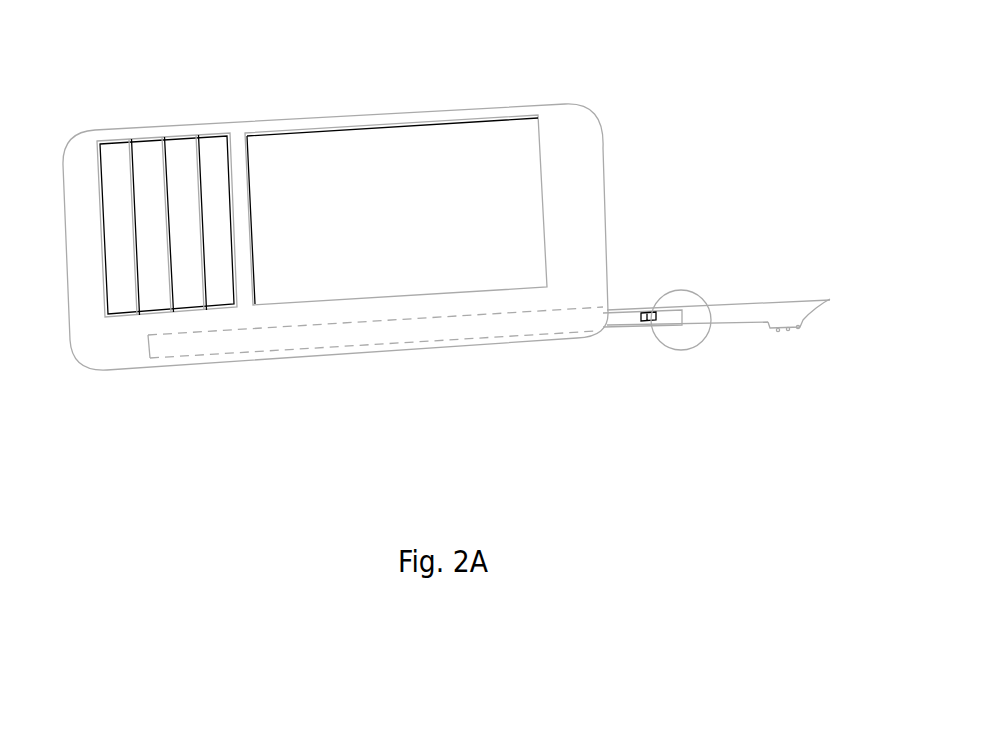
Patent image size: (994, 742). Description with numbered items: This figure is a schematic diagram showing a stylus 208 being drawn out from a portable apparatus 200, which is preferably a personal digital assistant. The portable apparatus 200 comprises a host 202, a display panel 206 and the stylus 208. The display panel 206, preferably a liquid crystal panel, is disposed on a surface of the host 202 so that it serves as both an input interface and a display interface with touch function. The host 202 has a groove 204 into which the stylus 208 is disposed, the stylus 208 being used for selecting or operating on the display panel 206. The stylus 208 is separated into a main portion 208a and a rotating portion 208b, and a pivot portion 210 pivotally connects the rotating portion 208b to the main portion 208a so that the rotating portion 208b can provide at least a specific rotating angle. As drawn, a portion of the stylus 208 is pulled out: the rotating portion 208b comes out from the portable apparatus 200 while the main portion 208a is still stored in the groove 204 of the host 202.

The portable apparatus 200 is at (700, 62).
The host 202 is at (590, 180).
The groove 204 is at (273, 340).
The display panel 206 is at (323, 140).
The stylus 208 is at (716, 404).
The main portion 208a is at (624, 322).
The rotating portion 208b is at (743, 317).
The pivot portion 210 is at (680, 292).